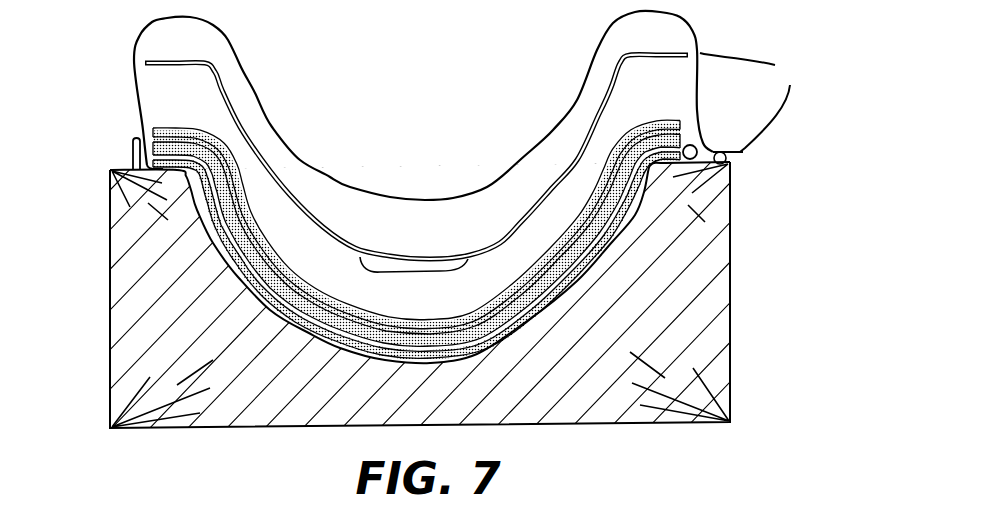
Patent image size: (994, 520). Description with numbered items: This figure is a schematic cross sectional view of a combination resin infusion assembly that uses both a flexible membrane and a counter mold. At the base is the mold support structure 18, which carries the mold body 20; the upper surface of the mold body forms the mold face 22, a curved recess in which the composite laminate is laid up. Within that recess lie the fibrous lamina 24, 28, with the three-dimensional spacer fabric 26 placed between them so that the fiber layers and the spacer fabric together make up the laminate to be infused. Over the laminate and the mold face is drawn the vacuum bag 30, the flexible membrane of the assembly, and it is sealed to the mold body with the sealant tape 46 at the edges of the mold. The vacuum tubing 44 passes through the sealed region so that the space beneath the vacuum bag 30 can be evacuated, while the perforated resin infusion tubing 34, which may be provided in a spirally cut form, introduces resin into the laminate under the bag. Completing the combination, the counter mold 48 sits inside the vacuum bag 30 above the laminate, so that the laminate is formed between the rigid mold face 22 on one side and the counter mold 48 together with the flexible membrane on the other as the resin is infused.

The mold support structure 18 is at (232, 438).
The mold body 20 is at (611, 362).
The mold face 22 is at (277, 311).
The fibrous lamina 24 is at (652, 165).
The three-dimensional spacer fabric 26 is at (697, 142).
The fibrous lamina 28 is at (659, 119).
The vacuum bag 30 is at (350, 185).
The perforated resin infusion tubing 34 is at (728, 164).
The vacuum tubing 44 is at (131, 148).
The sealant tape 46 is at (112, 171).
The counter mold 48 is at (402, 272).